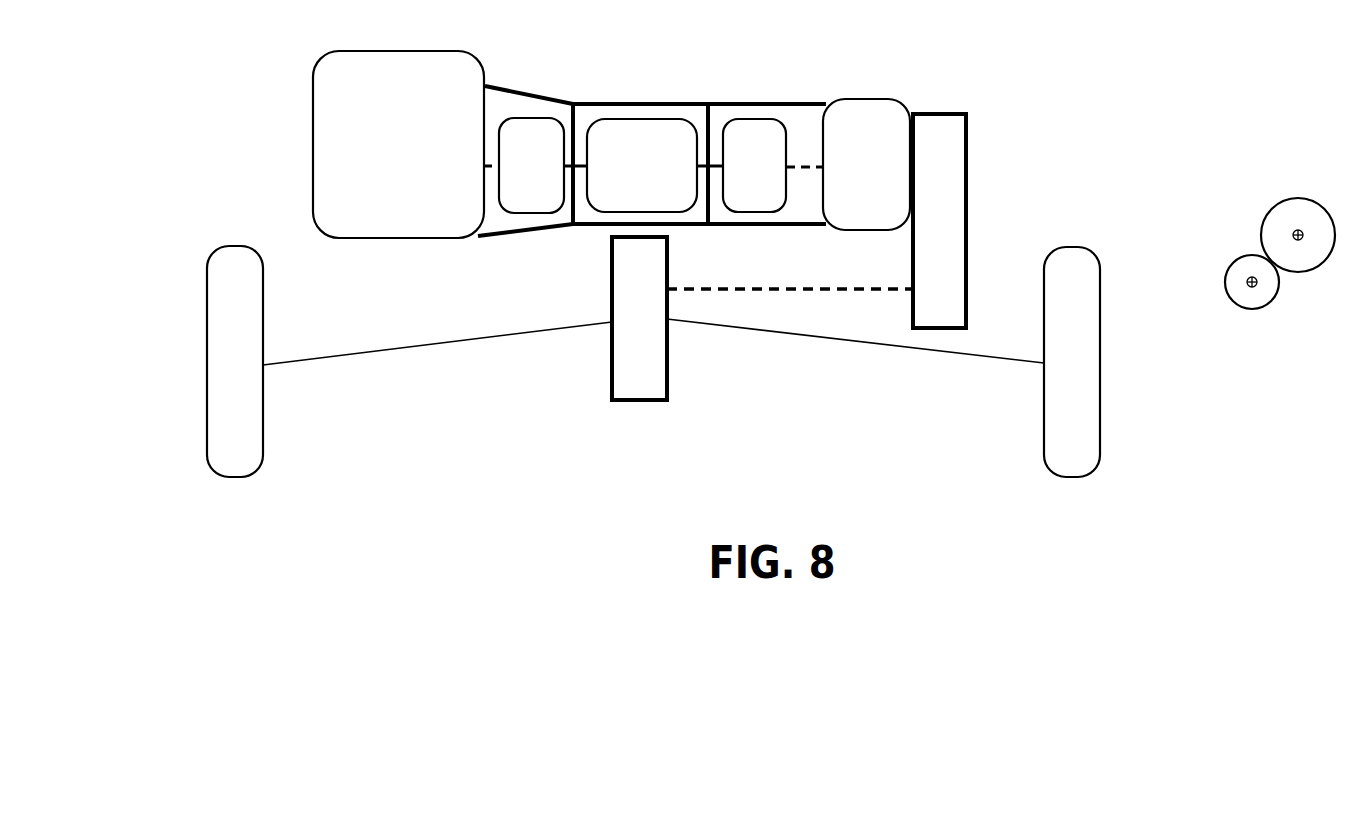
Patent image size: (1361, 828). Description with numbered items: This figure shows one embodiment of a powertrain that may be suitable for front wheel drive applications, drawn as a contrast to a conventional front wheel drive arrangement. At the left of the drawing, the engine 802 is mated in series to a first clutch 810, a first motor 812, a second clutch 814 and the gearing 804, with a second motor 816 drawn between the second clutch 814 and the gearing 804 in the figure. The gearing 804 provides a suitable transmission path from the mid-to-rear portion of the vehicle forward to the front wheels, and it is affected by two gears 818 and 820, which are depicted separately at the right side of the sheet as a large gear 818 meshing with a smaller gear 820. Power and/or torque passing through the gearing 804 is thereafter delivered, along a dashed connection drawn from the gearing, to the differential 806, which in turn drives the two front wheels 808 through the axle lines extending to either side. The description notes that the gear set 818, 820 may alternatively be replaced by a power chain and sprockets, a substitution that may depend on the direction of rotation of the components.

The engine 802 is at (398, 144).
The gearing 804 is at (966, 174).
The differential 806 is at (667, 400).
The front wheels 808 is at (263, 453).
The Clutch 1 810 is at (530, 137).
The Motor 1 812 is at (642, 165).
The Clutch 2 814 is at (752, 138).
The motor M2 816 is at (866, 164).
The gear 818 is at (1296, 198).
The gear 820 is at (1258, 308).